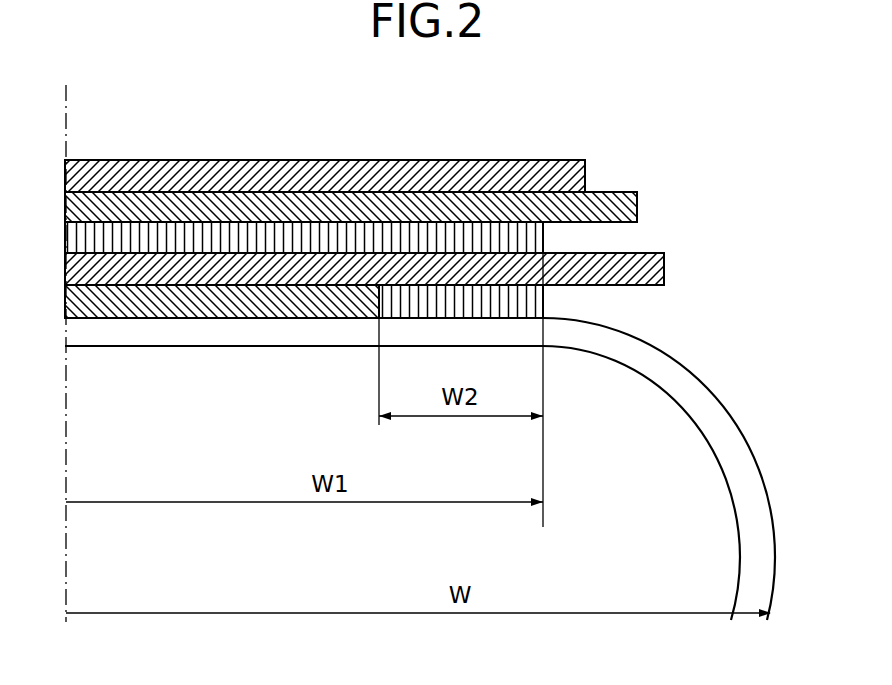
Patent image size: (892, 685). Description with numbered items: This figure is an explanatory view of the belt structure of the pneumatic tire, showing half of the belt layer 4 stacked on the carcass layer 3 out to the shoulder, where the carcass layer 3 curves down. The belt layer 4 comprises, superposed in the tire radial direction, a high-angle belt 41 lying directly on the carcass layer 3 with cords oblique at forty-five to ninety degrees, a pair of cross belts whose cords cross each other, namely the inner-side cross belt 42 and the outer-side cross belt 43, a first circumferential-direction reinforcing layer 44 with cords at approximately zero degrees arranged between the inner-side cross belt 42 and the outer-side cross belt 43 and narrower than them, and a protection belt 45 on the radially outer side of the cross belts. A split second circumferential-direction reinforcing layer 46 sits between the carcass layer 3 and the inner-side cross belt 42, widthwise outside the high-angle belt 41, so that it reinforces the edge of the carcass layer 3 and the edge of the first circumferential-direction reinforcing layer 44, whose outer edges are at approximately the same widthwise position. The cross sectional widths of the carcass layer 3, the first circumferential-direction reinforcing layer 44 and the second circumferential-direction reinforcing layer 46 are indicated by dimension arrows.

The carcass layer 3 is at (733, 446).
The belt layer 4 is at (434, 283).
The high-angle belt 41 is at (317, 303).
The inner-side cross belt 42 is at (664, 269).
The outer-side cross belt 43 is at (637, 206).
The first circumferential-direction reinforcing layer 44 is at (543, 238).
The protection belt 45 is at (585, 174).
The second circumferential-direction reinforcing layer 46 is at (543, 300).